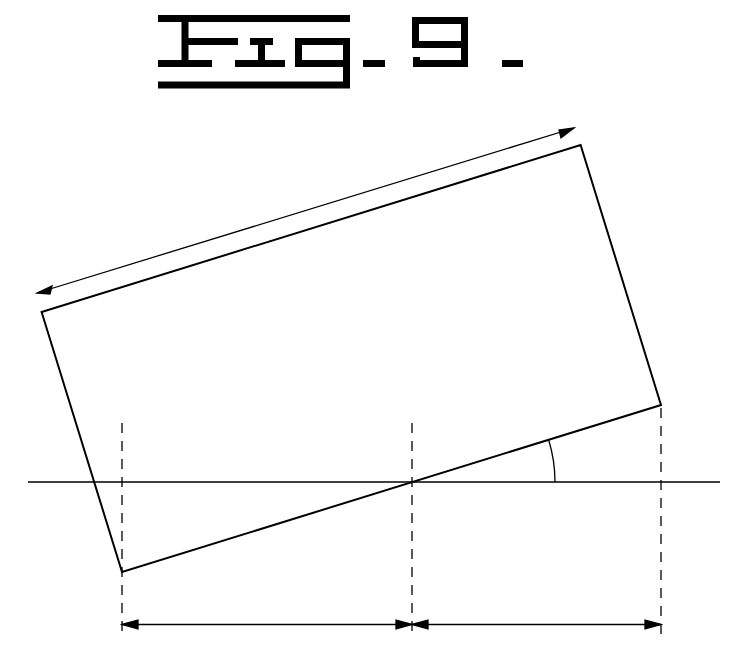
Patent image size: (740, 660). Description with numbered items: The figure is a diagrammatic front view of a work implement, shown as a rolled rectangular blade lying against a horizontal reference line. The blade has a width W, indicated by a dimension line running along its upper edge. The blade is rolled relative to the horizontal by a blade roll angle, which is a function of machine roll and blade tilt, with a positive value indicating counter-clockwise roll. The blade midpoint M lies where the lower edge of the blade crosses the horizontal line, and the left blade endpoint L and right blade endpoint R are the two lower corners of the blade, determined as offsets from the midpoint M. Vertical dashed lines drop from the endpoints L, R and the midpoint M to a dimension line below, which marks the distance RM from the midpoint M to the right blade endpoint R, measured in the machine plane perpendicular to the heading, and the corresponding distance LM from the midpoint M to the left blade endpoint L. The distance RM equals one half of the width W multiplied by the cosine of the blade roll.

The width of the blade W is at (305, 211).
The blade midpoint M is at (414, 481).
The left blade endpoint L is at (662, 403).
The right blade endpoint R is at (120, 571).
The distance from the midpoint to the right blade endpoint RM is at (267, 612).
The distance from midpoint to left corner LM is at (536, 612).